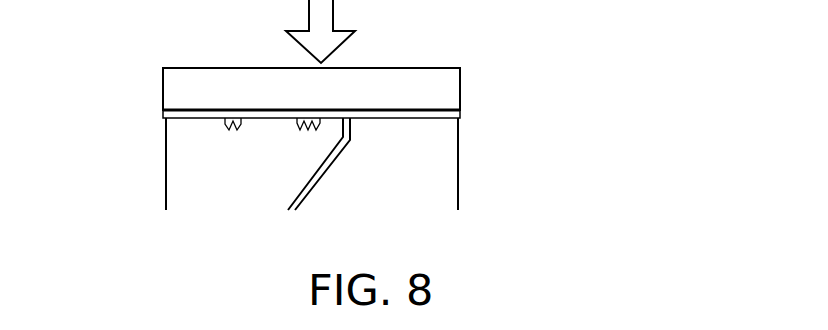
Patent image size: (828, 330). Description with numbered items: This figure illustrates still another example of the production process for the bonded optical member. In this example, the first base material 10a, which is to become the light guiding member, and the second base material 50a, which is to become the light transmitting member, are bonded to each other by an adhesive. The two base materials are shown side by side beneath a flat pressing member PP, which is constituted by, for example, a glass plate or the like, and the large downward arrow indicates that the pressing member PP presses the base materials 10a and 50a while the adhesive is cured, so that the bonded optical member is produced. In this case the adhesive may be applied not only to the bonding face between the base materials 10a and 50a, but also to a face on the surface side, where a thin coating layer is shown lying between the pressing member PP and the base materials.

The pressing member PP is at (403, 90).
The second base material 50a is at (190, 190).
The first base material 10a is at (427, 195).